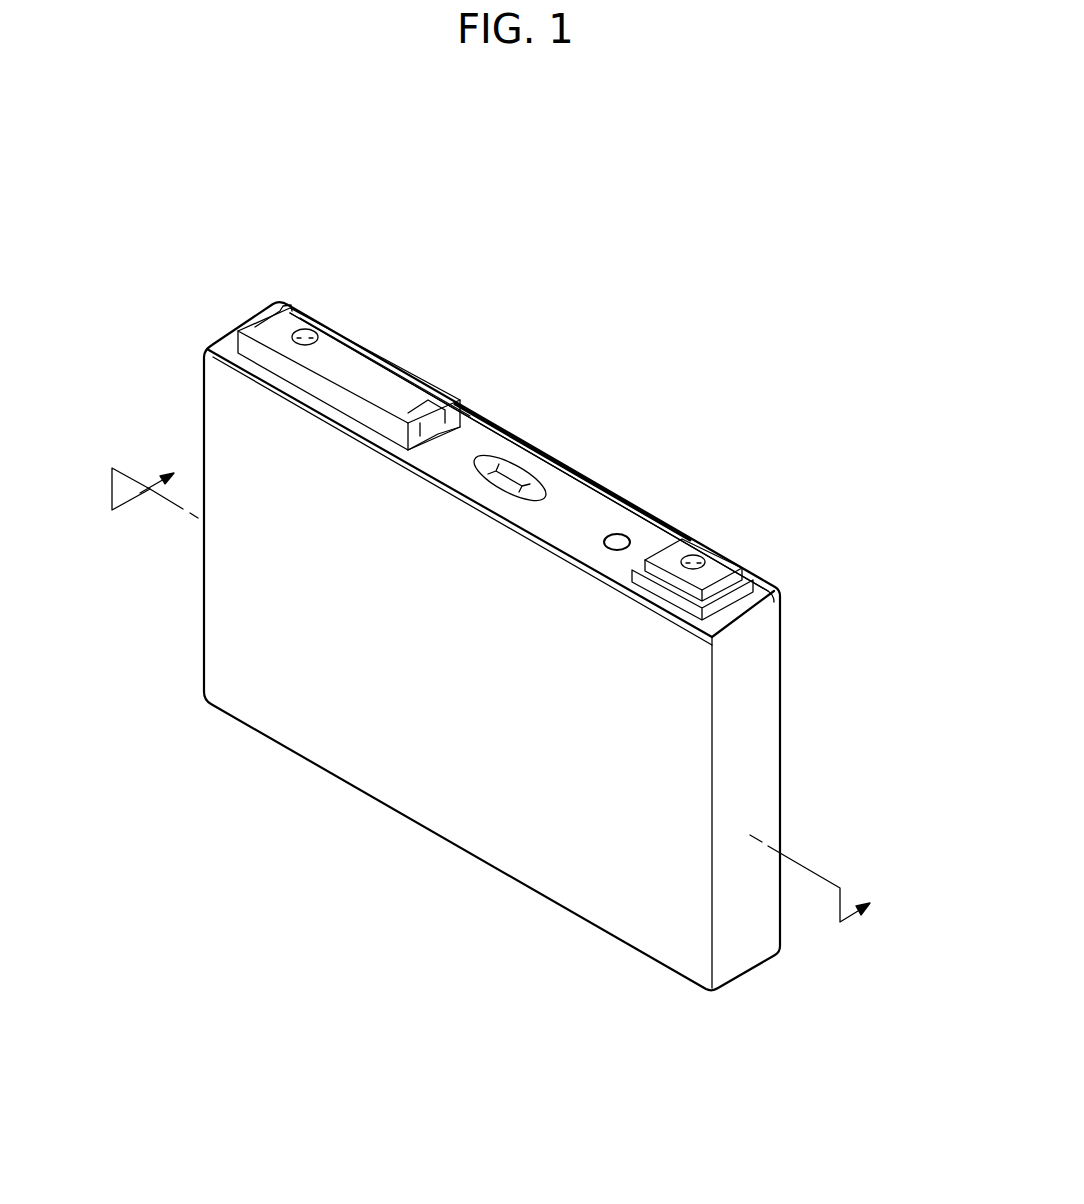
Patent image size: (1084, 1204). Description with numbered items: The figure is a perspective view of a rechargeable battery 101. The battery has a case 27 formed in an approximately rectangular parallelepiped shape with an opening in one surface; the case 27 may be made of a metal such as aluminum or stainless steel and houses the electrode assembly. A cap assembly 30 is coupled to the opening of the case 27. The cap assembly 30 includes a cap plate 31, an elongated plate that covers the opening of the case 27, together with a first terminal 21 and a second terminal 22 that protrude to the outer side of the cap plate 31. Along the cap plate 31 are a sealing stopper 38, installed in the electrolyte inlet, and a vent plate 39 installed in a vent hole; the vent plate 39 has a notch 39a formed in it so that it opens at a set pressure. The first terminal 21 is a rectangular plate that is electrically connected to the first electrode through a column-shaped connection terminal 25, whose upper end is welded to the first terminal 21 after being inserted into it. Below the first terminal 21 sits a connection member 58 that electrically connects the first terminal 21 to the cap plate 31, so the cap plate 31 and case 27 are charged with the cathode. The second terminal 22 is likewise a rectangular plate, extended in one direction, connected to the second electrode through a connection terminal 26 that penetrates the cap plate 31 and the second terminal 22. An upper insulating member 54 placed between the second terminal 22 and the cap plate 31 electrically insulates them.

The rechargeable battery 101 is at (572, 264).
The case 27 is at (404, 785).
The cap assembly 30 is at (595, 488).
The cap plate 31 is at (466, 430).
The vent plate 39 is at (512, 458).
The notch 39a is at (522, 482).
The sealing stopper 38 is at (622, 534).
The second terminal 22 is at (338, 340).
The connection terminal 26 is at (306, 329).
The upper insulating member 54 is at (410, 368).
The first terminal 21 is at (720, 564).
The connection terminal 25 is at (694, 554).
The connection member 58 is at (746, 572).